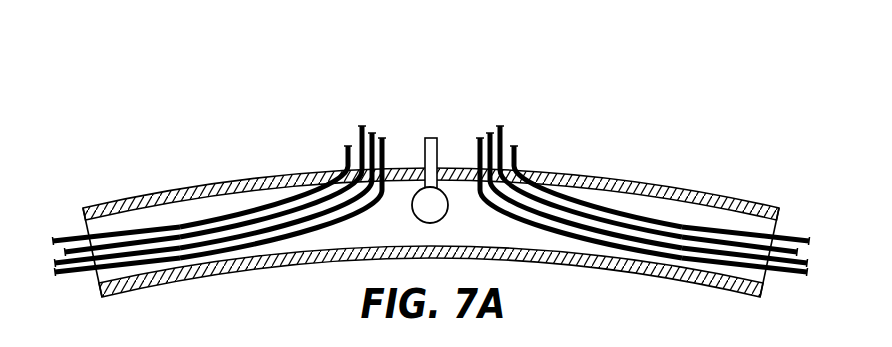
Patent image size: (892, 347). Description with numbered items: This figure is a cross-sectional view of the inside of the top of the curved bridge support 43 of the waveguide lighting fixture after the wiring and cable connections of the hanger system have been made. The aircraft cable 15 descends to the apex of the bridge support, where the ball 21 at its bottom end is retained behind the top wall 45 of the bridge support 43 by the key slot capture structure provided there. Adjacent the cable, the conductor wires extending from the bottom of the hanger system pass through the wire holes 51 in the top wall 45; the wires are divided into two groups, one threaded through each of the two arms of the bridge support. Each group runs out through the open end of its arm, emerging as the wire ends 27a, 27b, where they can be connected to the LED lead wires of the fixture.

The aircraft cable 15 is at (427, 152).
The ball 21 is at (423, 207).
The wire ends 27a is at (73, 237).
The wire ends 27b is at (793, 240).
The bridge support 43 is at (180, 280).
The top wall 45 is at (618, 180).
The wire holes 51 is at (344, 166).